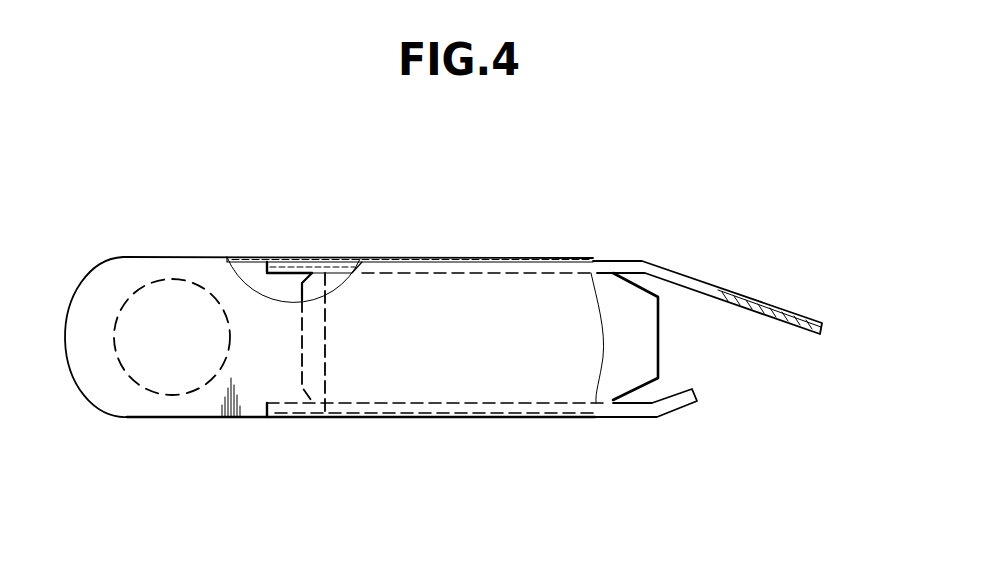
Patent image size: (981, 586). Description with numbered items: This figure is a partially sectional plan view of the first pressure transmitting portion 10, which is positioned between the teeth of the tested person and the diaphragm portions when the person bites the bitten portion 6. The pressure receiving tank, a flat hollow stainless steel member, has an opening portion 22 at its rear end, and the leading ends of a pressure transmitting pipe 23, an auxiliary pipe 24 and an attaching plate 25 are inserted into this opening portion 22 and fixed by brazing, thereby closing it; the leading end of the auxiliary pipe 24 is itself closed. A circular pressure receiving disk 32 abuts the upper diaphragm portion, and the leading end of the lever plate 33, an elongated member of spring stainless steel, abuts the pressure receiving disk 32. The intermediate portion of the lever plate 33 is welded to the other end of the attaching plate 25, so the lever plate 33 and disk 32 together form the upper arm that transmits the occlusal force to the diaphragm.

The first pressure transmitting portion 10 is at (478, 242).
The bitten portion 6 is at (131, 424).
The opening portion 22 is at (326, 367).
The pressure transmitting pipe 23 is at (264, 277).
The auxiliary pipe 24 is at (390, 403).
The attaching plate 25 is at (642, 288).
The pressure receiving disk 32 is at (138, 290).
The lever plate 33 is at (607, 377).